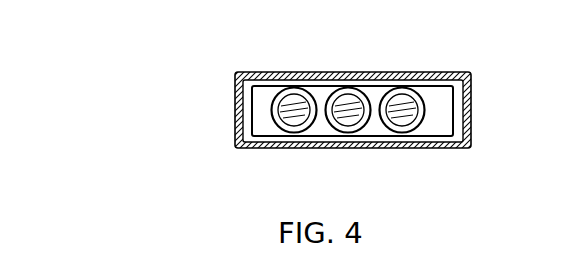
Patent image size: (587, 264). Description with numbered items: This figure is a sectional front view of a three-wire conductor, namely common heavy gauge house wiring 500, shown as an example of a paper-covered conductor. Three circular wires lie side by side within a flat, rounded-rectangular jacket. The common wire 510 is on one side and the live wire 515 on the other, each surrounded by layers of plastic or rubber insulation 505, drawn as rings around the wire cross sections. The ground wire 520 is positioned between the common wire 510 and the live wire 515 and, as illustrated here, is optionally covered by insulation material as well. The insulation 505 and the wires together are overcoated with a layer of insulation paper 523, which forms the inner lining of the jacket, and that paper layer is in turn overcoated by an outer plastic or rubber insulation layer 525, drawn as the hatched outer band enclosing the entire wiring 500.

The heavy gauge house wiring 500 is at (128, 116).
The plastic or rubber insulation 505 is at (299, 89).
The common wire 510 is at (296, 113).
The live wire 515 is at (403, 115).
The ground wire 520 is at (350, 113).
The insulation paper 523 is at (247, 112).
The plastic or rubber insulation layer 525 is at (236, 116).